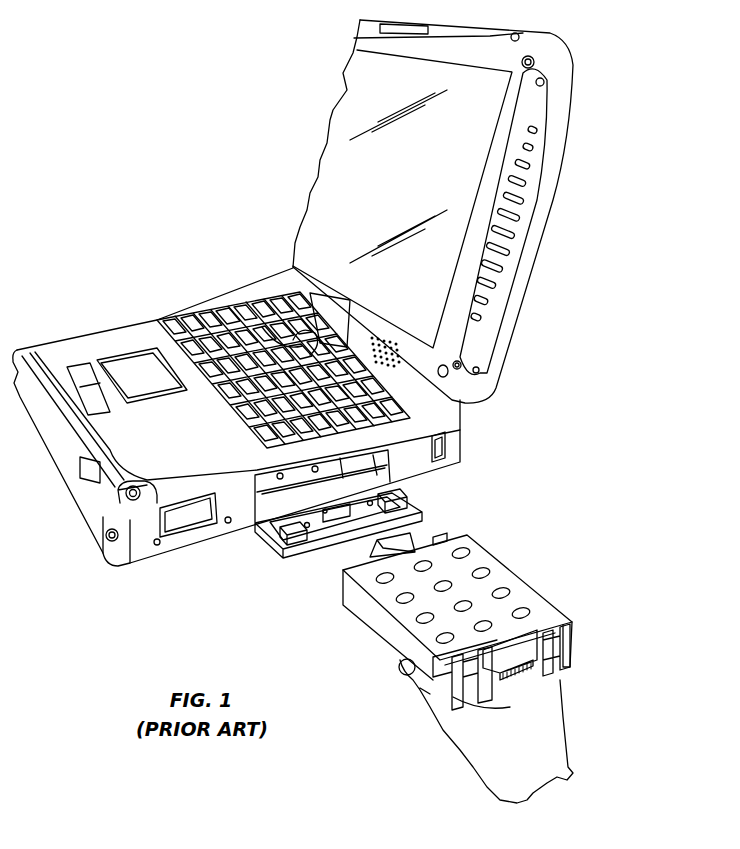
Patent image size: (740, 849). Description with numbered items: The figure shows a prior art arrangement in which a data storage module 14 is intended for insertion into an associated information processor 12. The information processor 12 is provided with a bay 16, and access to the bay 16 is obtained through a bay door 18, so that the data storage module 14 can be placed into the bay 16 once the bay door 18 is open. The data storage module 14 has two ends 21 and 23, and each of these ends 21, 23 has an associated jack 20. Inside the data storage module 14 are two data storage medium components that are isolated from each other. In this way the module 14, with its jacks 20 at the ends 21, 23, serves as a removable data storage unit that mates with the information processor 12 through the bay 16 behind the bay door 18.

The information processor 12 is at (122, 338).
The data storage module 14 is at (383, 623).
The bay 16 is at (258, 520).
The bay door 18 is at (402, 501).
The jack 20 is at (522, 680).
The end 21 is at (412, 648).
The end 23 is at (457, 532).